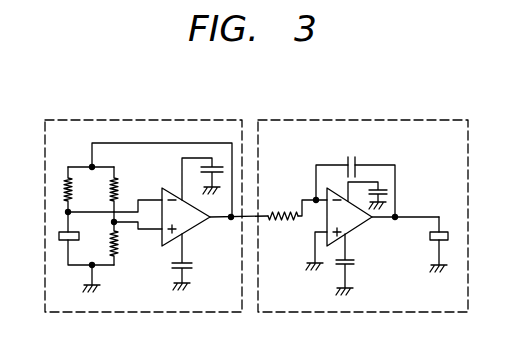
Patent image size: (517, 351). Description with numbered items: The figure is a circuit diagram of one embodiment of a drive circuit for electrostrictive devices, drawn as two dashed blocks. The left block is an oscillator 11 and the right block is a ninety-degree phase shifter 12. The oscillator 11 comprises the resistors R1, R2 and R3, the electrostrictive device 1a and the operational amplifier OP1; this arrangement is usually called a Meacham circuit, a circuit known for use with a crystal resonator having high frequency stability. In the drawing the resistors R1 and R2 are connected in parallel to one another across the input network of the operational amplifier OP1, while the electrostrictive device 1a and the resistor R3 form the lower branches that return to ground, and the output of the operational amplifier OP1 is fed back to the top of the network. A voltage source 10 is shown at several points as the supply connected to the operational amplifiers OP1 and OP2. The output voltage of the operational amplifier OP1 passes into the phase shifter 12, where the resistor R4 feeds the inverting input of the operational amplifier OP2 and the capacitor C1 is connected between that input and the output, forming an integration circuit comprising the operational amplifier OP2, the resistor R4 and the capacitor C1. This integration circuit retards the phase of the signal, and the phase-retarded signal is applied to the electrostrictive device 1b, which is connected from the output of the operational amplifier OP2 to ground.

The voltage source 10 is at (216, 166).
The oscillator 11 is at (217, 119).
The 90° phase shifter 12 is at (440, 119).
The electrostrictive device 1a is at (79, 240).
The electrostrictive device 1b is at (445, 226).
The resistor R1 is at (68, 182).
The resistor R2 is at (117, 189).
The resistor R3 is at (119, 245).
The resistor R4 is at (280, 212).
The capacitor C1 is at (352, 158).
The operational amplifier OP1 is at (194, 234).
The operational amplifier OP2 is at (359, 234).